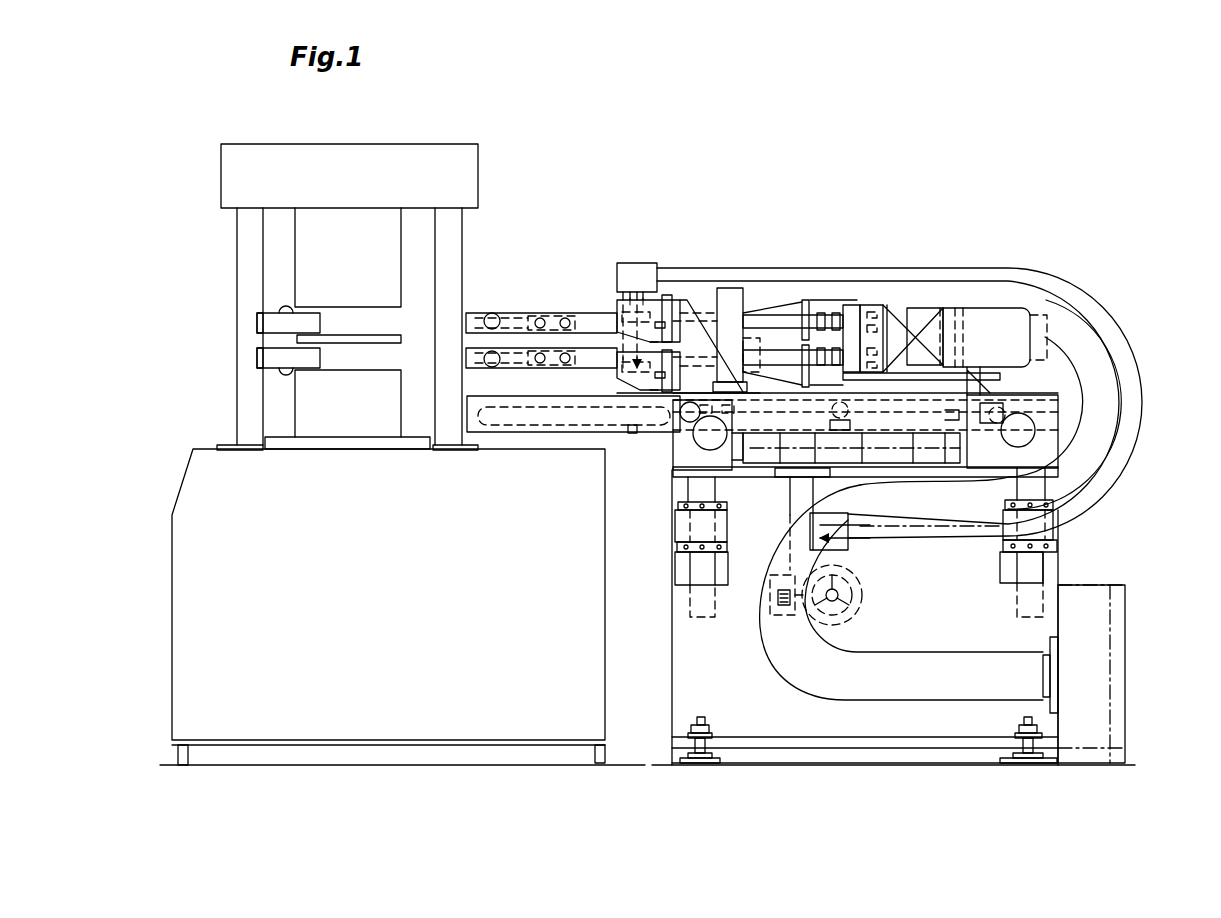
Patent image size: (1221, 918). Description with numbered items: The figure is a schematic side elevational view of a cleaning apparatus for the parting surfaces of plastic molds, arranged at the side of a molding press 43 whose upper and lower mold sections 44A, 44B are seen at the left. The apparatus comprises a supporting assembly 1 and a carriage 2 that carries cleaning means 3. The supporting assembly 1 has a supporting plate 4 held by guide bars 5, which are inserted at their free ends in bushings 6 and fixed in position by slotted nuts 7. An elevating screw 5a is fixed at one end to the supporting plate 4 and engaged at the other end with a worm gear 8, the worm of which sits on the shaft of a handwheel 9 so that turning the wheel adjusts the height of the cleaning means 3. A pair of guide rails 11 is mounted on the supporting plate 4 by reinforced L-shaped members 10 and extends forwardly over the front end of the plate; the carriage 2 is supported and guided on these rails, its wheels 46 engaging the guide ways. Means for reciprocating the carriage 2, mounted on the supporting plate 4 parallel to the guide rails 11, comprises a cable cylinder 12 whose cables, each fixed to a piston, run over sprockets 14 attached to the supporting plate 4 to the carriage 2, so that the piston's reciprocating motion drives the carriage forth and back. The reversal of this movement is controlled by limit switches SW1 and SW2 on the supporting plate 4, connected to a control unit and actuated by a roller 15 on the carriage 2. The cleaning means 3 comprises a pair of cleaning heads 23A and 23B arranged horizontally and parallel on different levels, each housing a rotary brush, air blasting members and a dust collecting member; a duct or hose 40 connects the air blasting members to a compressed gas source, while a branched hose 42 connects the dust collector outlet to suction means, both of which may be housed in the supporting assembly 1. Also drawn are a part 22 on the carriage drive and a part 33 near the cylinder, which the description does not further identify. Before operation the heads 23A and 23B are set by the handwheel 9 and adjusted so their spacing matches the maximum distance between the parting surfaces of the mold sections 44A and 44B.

The supporting assembly 1 is at (1067, 557).
The carriage 2 is at (1012, 390).
The cleaning means 3 is at (588, 292).
The supporting plate 4 is at (688, 477).
The guide bars 5 is at (690, 487).
The elevating screw 5a is at (802, 493).
The bushings 6 is at (680, 530).
The slotted nuts 7 is at (687, 503).
The worm gear 8 is at (780, 608).
The handwheel 9 is at (863, 595).
The reinforced L-shaped members 10 is at (687, 450).
The guide rails 11 is at (567, 427).
The cable cylinder 12 is at (903, 453).
The sprockets 14 is at (710, 440).
The roller 15 is at (862, 435).
The bracket 22 is at (728, 300).
The cleaning head 23A is at (515, 320).
The cleaning head 23B is at (507, 362).
The cable 33 is at (1037, 310).
The duct or hose 40 is at (900, 277).
The branched hose 42 is at (1133, 457).
The molding press 43 is at (210, 418).
The upper mold section 44A is at (315, 290).
The lower mold section 44B is at (318, 390).
The wheels 46 is at (688, 412).
The limit switch SW1 is at (632, 432).
The limit switch SW2 is at (845, 420).